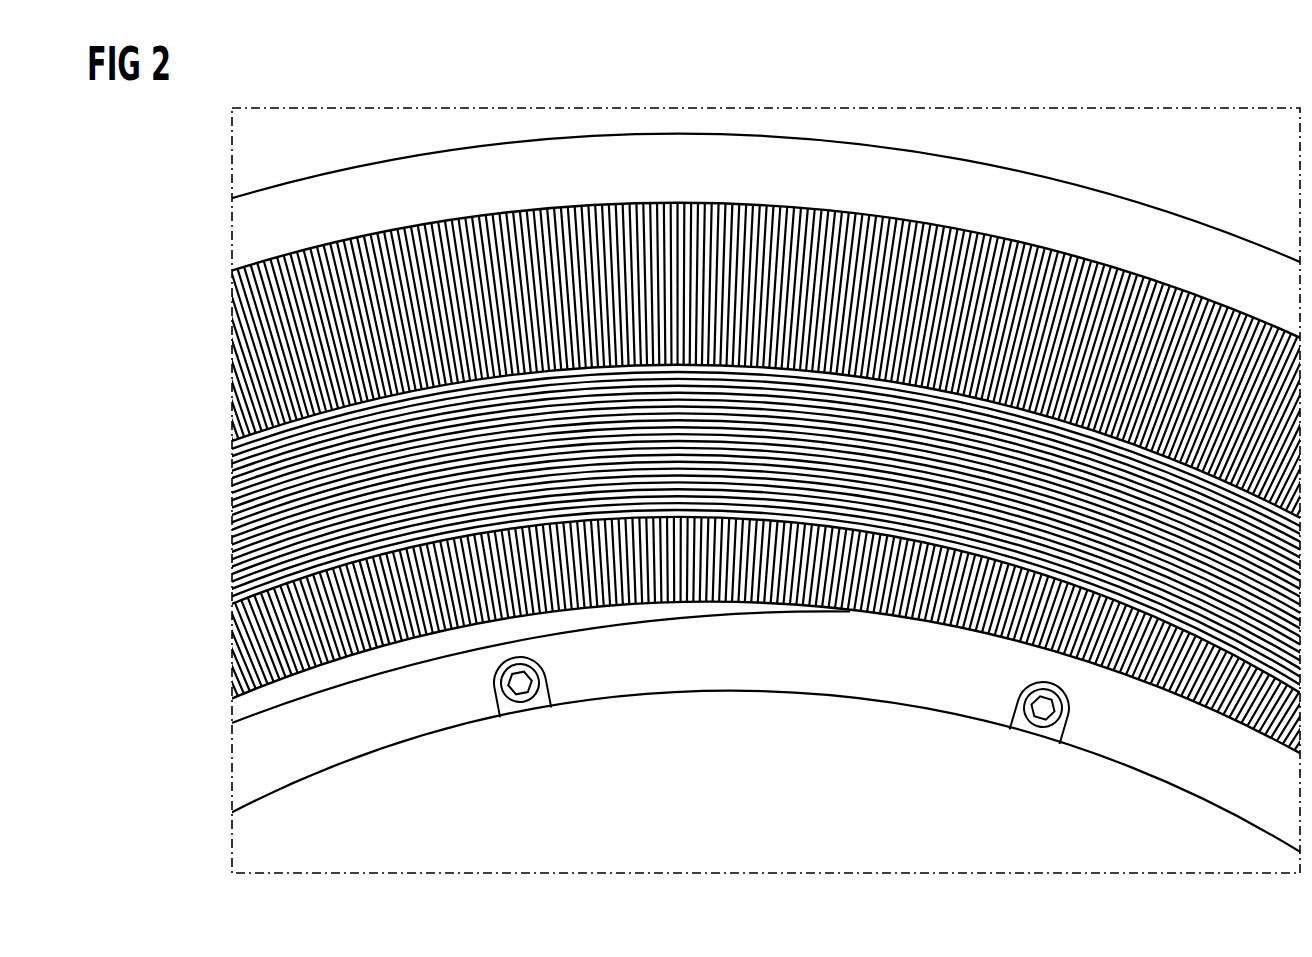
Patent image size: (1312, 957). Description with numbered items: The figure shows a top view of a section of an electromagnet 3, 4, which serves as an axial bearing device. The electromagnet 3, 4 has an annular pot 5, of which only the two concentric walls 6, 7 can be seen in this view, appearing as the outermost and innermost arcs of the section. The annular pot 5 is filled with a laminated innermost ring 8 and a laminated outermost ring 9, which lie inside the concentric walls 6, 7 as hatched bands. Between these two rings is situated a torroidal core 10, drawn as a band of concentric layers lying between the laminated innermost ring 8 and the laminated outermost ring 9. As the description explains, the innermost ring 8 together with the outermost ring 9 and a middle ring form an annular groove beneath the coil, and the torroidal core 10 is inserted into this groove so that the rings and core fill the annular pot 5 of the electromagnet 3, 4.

The electromagnet 3 is at (200, 507).
The electromagnet 4 is at (656, 580).
The annular pot 5 is at (739, 84).
The concentric wall 6 is at (243, 233).
The concentric wall 7 is at (243, 767).
The laminated innermost ring 8 is at (243, 654).
The laminated outermost ring 9 is at (243, 360).
The torroidal core 10 is at (243, 549).